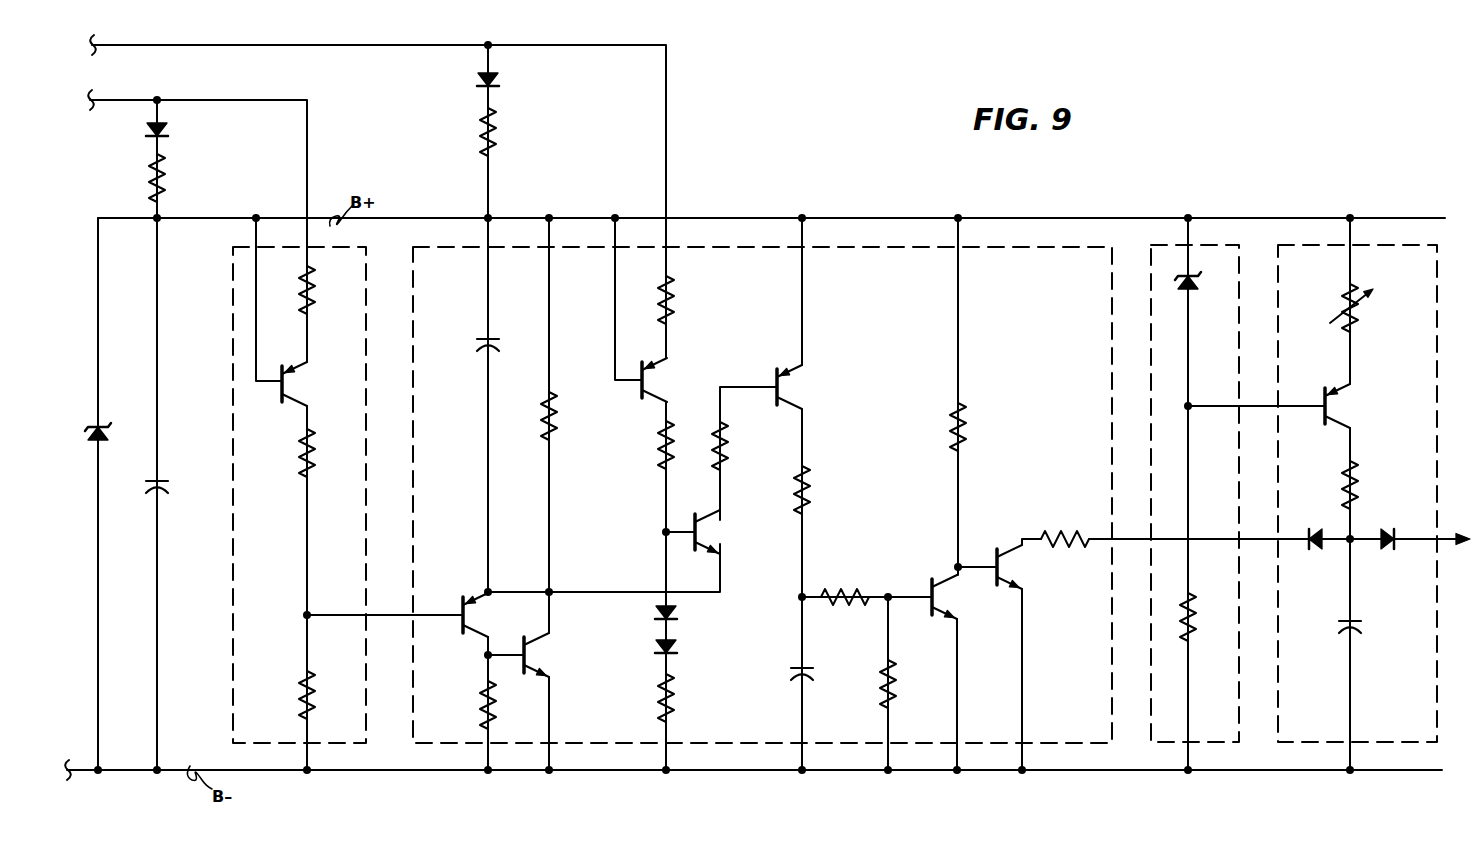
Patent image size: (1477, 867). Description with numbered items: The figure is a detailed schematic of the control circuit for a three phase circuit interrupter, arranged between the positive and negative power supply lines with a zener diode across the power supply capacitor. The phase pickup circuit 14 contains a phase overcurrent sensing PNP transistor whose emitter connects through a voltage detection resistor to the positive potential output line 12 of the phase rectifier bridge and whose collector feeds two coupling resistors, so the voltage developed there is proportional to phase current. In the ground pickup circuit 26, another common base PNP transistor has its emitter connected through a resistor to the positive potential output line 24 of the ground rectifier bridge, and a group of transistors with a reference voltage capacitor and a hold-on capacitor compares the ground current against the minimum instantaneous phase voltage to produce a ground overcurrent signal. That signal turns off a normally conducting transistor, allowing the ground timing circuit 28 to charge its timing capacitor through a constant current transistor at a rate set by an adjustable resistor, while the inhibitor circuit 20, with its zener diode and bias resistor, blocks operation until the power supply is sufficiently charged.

The positive potential DC output 12 is at (100, 105).
The phase pickup circuit 14 is at (227, 300).
The inhibitor circuit 20 is at (1151, 403).
The positive potential output line 24 is at (335, 52).
The ground pickup circuit 26 is at (1108, 622).
The ground timing circuit 28 is at (1437, 442).